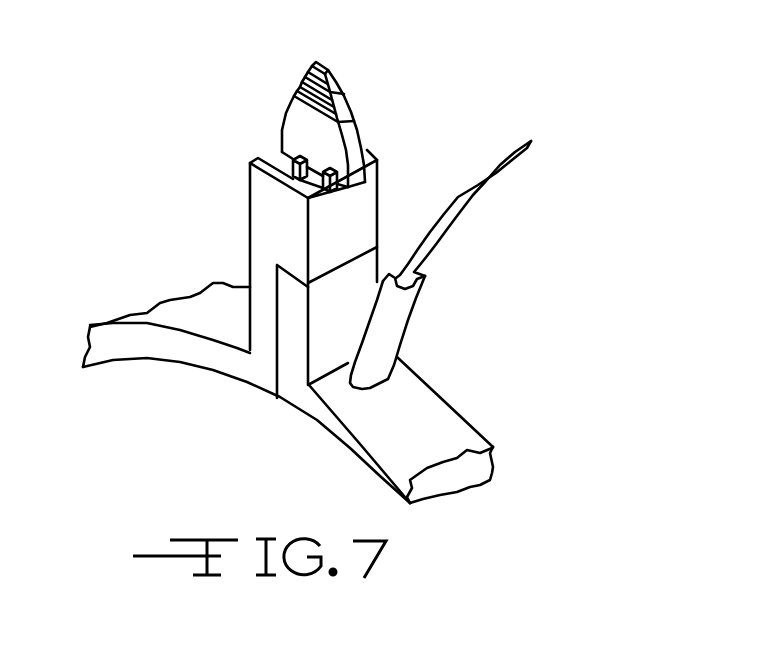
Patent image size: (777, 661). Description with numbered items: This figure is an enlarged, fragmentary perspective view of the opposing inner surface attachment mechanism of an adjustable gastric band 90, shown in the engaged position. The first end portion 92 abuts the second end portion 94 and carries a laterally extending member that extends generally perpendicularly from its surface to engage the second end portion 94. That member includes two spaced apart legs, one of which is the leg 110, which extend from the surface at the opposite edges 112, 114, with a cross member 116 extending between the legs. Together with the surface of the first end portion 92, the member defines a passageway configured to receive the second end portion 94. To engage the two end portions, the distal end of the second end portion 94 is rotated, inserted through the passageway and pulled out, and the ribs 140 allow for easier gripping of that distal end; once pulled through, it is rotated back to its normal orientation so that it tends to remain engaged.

The adjustable gastric band 90 is at (145, 404).
The first end portion 92 is at (391, 172).
The second end portion 94 is at (398, 250).
The leg 110 is at (337, 249).
The edge 112 is at (263, 226).
The edge 114 is at (393, 169).
The cross member 116 is at (365, 239).
The ribs 140 is at (340, 84).